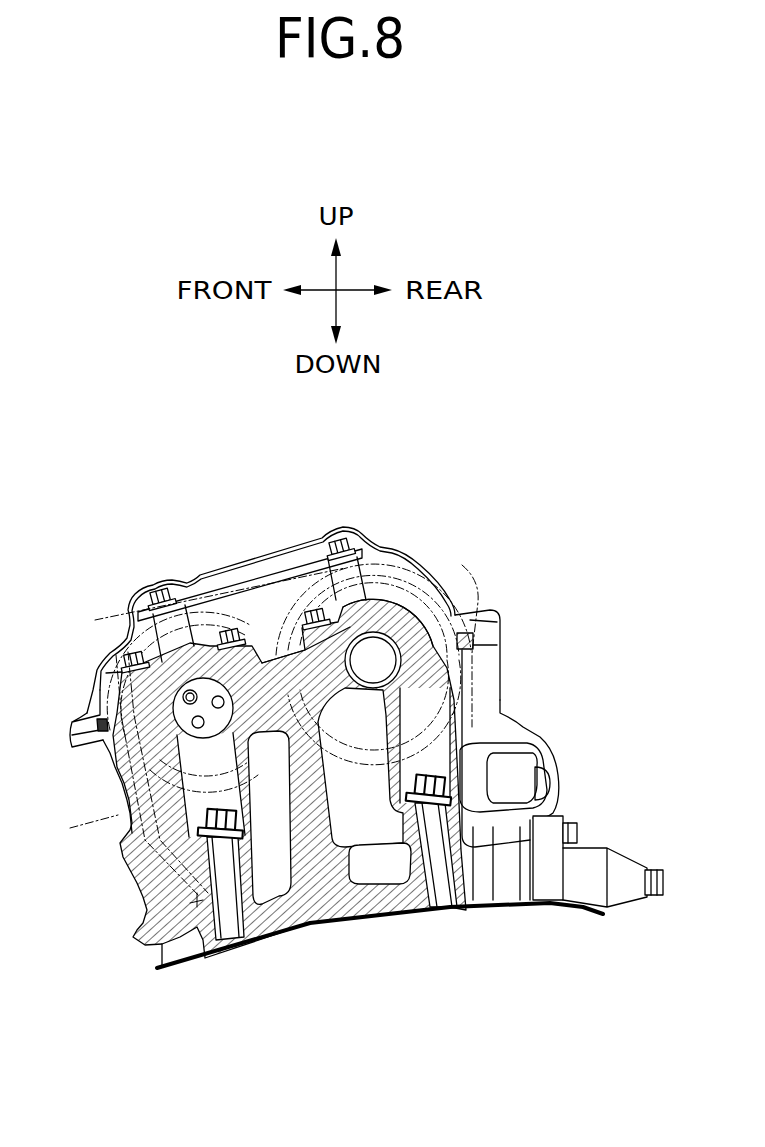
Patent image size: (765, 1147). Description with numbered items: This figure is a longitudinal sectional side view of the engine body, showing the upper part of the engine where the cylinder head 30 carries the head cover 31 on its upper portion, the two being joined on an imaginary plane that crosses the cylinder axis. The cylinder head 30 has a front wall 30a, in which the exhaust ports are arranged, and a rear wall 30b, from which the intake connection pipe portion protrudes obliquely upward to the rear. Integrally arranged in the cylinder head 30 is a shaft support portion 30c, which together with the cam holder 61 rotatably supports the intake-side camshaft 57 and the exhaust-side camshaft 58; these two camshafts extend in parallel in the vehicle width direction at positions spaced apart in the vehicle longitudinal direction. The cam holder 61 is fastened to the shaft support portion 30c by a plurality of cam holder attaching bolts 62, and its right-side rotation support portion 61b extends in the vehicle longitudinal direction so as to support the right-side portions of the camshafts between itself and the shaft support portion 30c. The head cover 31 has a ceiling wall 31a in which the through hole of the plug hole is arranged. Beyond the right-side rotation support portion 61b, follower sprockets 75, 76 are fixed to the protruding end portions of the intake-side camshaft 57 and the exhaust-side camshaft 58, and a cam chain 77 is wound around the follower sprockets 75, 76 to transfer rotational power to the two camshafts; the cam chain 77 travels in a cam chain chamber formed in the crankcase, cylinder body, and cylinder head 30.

The cylinder head 30 is at (122, 775).
The front wall 30a is at (140, 925).
The rear wall 30b is at (497, 753).
The shaft support portion 30c is at (273, 650).
The head cover 31 is at (460, 612).
The ceiling wall 31a is at (221, 583).
The intake-side camshaft 57 is at (378, 654).
The exhaust-side camshaft 58 is at (205, 678).
The cam holder 61 is at (384, 600).
The right-side rotation support portion 61b is at (137, 693).
The cam holder attaching bolts 62 is at (233, 622).
The follower sprocket 75 is at (452, 592).
The follower sprocket 76 is at (201, 597).
The cam chain 77 is at (124, 779).